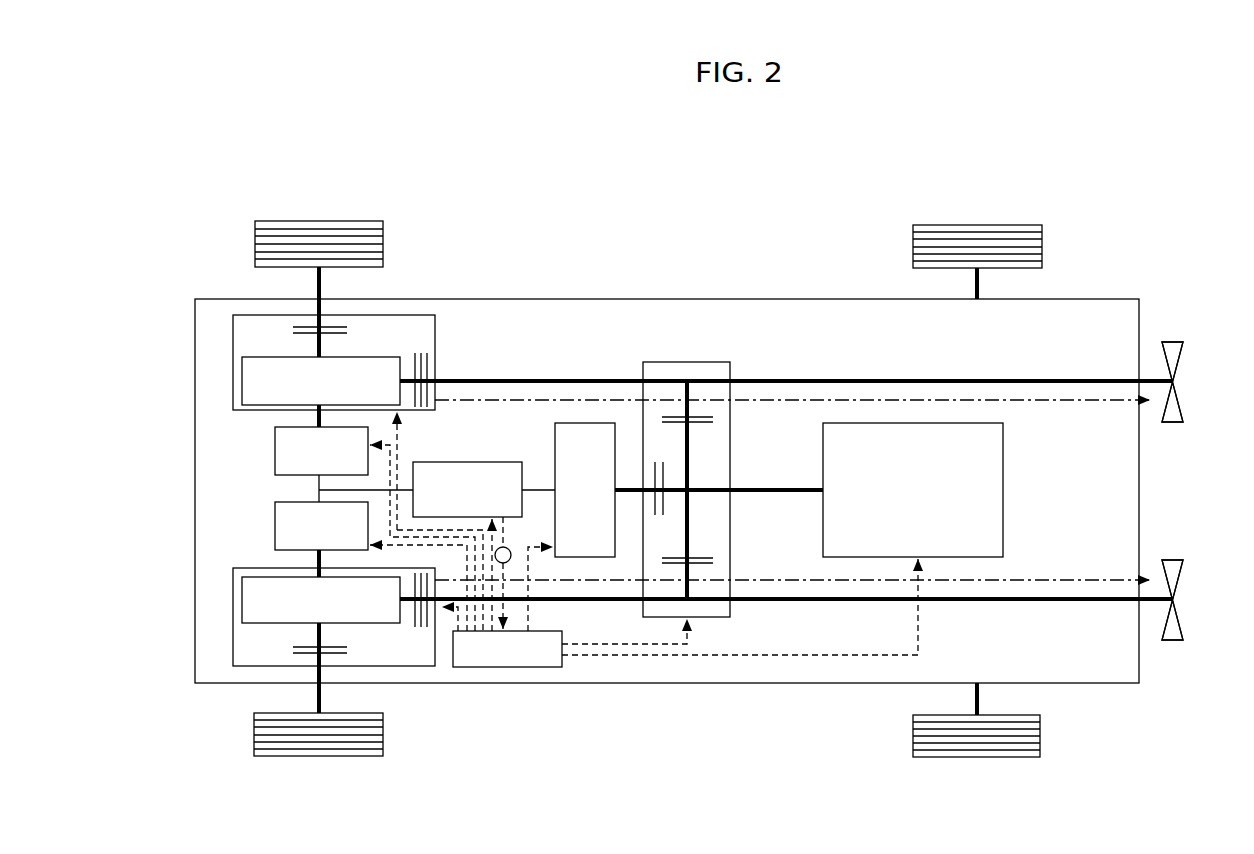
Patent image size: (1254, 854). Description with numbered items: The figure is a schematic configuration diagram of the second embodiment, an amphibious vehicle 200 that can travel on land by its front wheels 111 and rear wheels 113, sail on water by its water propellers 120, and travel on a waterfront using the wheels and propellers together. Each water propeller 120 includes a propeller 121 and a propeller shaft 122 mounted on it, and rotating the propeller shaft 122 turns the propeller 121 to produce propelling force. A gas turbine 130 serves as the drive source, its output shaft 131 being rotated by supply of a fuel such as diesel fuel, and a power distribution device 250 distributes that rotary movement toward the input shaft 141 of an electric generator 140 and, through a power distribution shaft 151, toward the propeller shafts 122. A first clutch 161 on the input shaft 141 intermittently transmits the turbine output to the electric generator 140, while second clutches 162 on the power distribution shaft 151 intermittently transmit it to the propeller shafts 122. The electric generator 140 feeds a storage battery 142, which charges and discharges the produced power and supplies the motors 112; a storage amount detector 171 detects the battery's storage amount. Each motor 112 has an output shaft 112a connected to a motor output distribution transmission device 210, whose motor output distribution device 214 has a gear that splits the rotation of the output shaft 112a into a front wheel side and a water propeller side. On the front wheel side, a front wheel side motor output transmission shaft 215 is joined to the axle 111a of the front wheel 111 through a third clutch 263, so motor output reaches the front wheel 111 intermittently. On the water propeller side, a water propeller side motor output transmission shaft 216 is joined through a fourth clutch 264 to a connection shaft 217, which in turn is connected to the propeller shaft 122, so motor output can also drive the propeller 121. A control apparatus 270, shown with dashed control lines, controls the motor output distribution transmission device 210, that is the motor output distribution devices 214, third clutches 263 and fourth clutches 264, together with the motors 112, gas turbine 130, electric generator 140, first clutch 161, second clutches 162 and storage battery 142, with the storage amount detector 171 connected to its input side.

The front wheel 111 is at (318, 220).
The axle 111a is at (319, 276).
The motor 112 is at (275, 465).
The output shaft 112a is at (317, 420).
The rear wheel 113 is at (977, 224).
The water propeller 120 is at (1180, 330).
The propeller 121 is at (1183, 395).
The propeller shaft 122 is at (1050, 380).
The gas turbine 130 is at (1003, 490).
The output shaft 131 is at (780, 497).
The electric generator 140 is at (572, 420).
The input shaft 141 is at (628, 487).
The storage battery 142 is at (458, 462).
The power distribution shaft 151 is at (688, 465).
The first clutch 161 is at (652, 512).
The second clutch 162 is at (705, 413).
The storage amount detector 171 is at (506, 563).
The amphibious vehicle 200 is at (163, 702).
The motor output distribution transmission device 210 is at (225, 326).
The motor output distribution device 214 is at (242, 385).
The front wheel side motor output transmission shaft 215 is at (323, 348).
The water propeller side motor output transmission shaft 216 is at (418, 353).
The connection shaft 217 is at (490, 378).
The power distribution device 250 is at (641, 630).
The third clutch 263 is at (300, 338).
The fourth clutch 264 is at (432, 360).
The control apparatus 270 is at (480, 667).